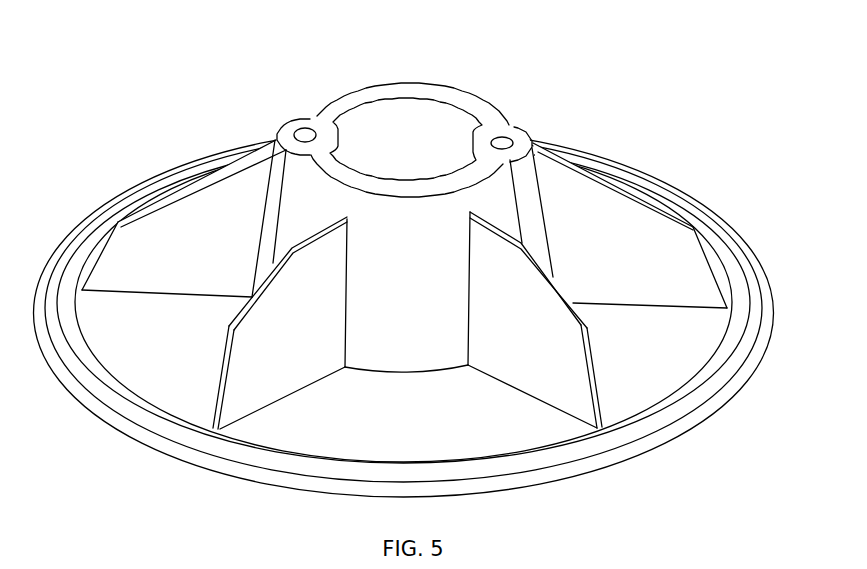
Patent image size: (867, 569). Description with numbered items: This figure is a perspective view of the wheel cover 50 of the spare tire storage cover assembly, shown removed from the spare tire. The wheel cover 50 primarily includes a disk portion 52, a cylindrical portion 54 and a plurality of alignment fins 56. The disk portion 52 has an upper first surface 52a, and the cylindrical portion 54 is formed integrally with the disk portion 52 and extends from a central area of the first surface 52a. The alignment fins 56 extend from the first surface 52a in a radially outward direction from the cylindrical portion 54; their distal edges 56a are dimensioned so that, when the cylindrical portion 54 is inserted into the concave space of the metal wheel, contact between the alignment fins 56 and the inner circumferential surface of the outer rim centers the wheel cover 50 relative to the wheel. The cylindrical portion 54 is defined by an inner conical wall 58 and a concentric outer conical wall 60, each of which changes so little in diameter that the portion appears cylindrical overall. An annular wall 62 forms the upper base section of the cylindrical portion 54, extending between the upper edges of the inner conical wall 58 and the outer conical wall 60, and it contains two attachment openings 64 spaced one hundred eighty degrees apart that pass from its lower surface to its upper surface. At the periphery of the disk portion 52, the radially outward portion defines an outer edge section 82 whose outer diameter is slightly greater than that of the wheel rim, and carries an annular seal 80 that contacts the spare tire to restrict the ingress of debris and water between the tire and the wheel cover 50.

The wheel cover 50 is at (632, 78).
The disk portion 52 is at (170, 375).
The first surface 52a is at (684, 344).
The cylindrical portion 54 is at (402, 220).
The alignment fins 56 is at (419, 282).
The distal edges 56a is at (110, 233).
The inner conical wall 58 is at (414, 128).
The outer conical wall 60 is at (391, 343).
The annular wall 62 is at (367, 92).
The attachment openings 64 is at (304, 130).
The annular seal 80 is at (666, 442).
The outer edge section 82 is at (755, 395).